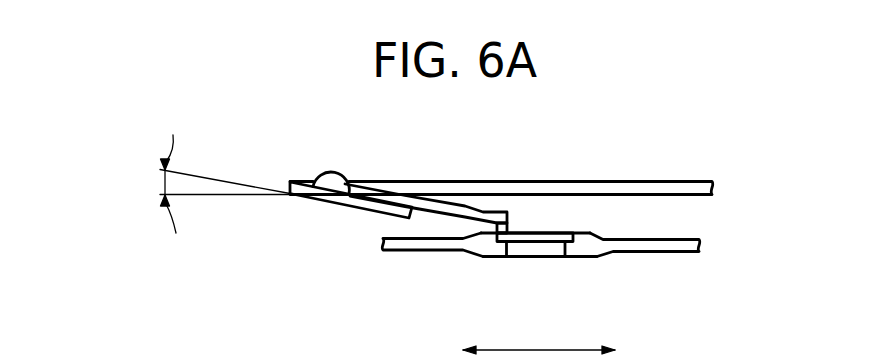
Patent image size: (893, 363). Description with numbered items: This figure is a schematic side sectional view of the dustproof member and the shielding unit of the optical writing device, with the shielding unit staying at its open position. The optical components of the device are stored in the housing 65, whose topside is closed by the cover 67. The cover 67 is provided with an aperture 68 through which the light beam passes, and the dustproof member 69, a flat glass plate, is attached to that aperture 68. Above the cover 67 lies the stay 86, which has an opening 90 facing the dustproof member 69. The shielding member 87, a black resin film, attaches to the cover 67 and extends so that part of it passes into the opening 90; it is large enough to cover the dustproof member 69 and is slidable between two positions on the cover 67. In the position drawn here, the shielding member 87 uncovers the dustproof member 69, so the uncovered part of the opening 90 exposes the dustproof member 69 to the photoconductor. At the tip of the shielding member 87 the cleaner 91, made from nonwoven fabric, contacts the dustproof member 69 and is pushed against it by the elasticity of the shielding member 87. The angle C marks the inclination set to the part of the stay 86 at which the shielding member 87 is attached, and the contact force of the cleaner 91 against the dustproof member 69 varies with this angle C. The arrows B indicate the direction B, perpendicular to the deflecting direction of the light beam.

The housing 65 is at (574, 255).
The cover 67 is at (400, 250).
The aperture 68 is at (520, 257).
The dustproof member 69 is at (567, 231).
The stay 86 is at (682, 185).
The shielding member 87 is at (428, 205).
The opening 90 is at (450, 177).
The cleaner 91 is at (515, 223).
The angle C is at (160, 183).
The direction B is at (539, 338).